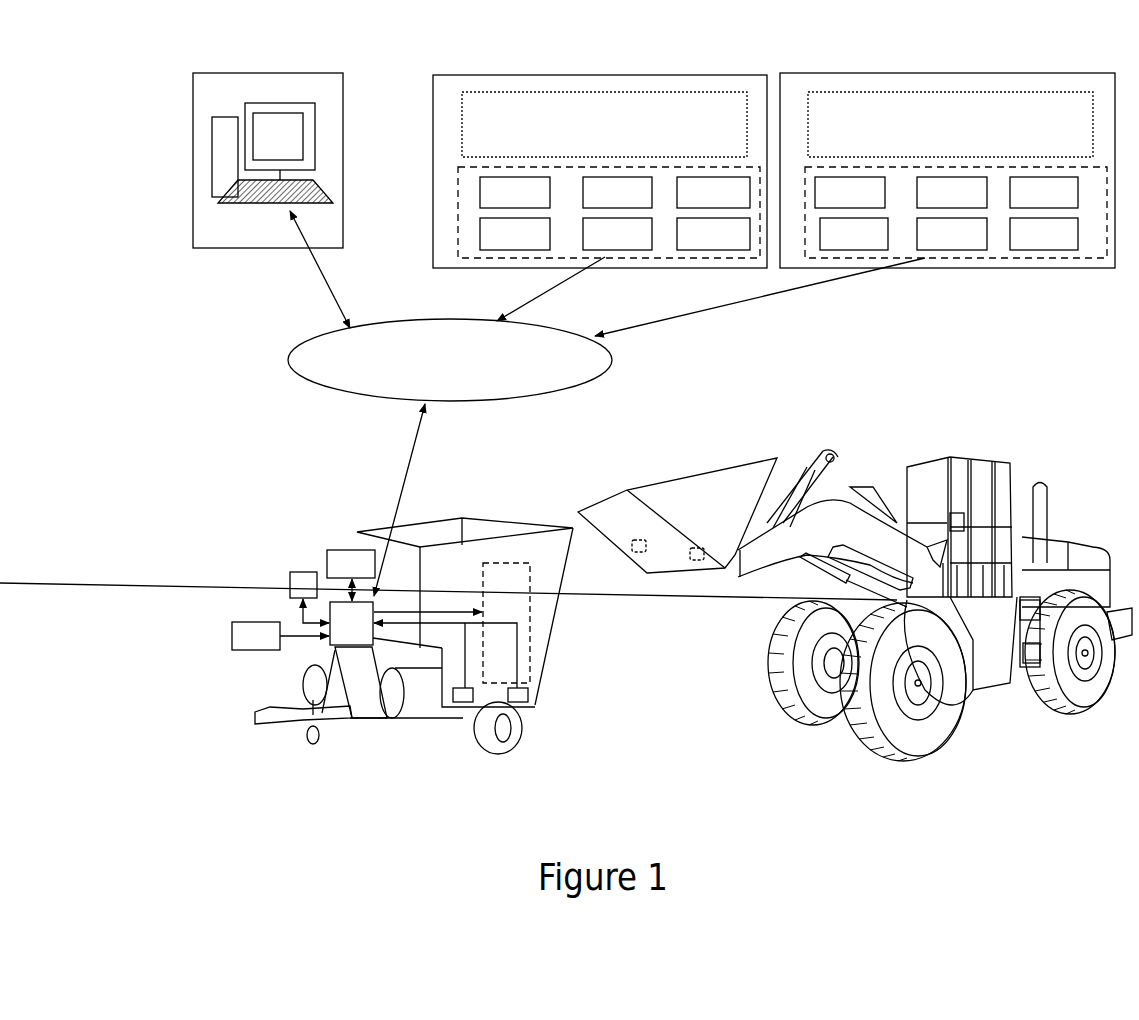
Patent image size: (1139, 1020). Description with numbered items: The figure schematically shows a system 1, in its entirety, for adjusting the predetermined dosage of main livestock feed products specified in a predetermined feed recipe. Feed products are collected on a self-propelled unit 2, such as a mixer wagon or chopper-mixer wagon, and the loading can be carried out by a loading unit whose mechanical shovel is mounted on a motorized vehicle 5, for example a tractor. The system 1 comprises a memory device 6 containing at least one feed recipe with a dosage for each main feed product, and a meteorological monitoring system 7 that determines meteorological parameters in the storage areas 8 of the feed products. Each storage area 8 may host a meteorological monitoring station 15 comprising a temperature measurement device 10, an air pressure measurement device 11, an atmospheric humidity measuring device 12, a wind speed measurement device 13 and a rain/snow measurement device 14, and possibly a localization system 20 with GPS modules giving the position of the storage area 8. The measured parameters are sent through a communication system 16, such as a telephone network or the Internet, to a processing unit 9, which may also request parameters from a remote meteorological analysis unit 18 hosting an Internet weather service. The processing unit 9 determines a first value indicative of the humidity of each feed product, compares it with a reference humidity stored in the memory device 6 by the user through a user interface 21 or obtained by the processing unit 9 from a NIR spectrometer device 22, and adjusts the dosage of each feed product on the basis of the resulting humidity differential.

The system 1 is at (668, 735).
The self-propelled unit 2 is at (419, 614).
The motorized vehicle 5 is at (566, 570).
The memory device 6 is at (300, 585).
The meteorological monitoring system 7 is at (458, 208).
The storage area 8 is at (433, 103).
The processing unit 9 is at (351, 623).
The temperature measurement device 10 is at (515, 192).
The air pressure measurement device 11 is at (617, 192).
The atmospheric humidity measuring device 12 is at (713, 192).
The speed measurement device 13 is at (515, 234).
The rain/snow measurement device 14 is at (617, 234).
The meteorological monitoring station 15 is at (428, 228).
The communication system 16 is at (450, 360).
The remote meteorological analysis unit 18 is at (193, 248).
The localization system 20 is at (713, 234).
The user interface 21 is at (348, 560).
The NIR spectrometer device 22 is at (232, 652).